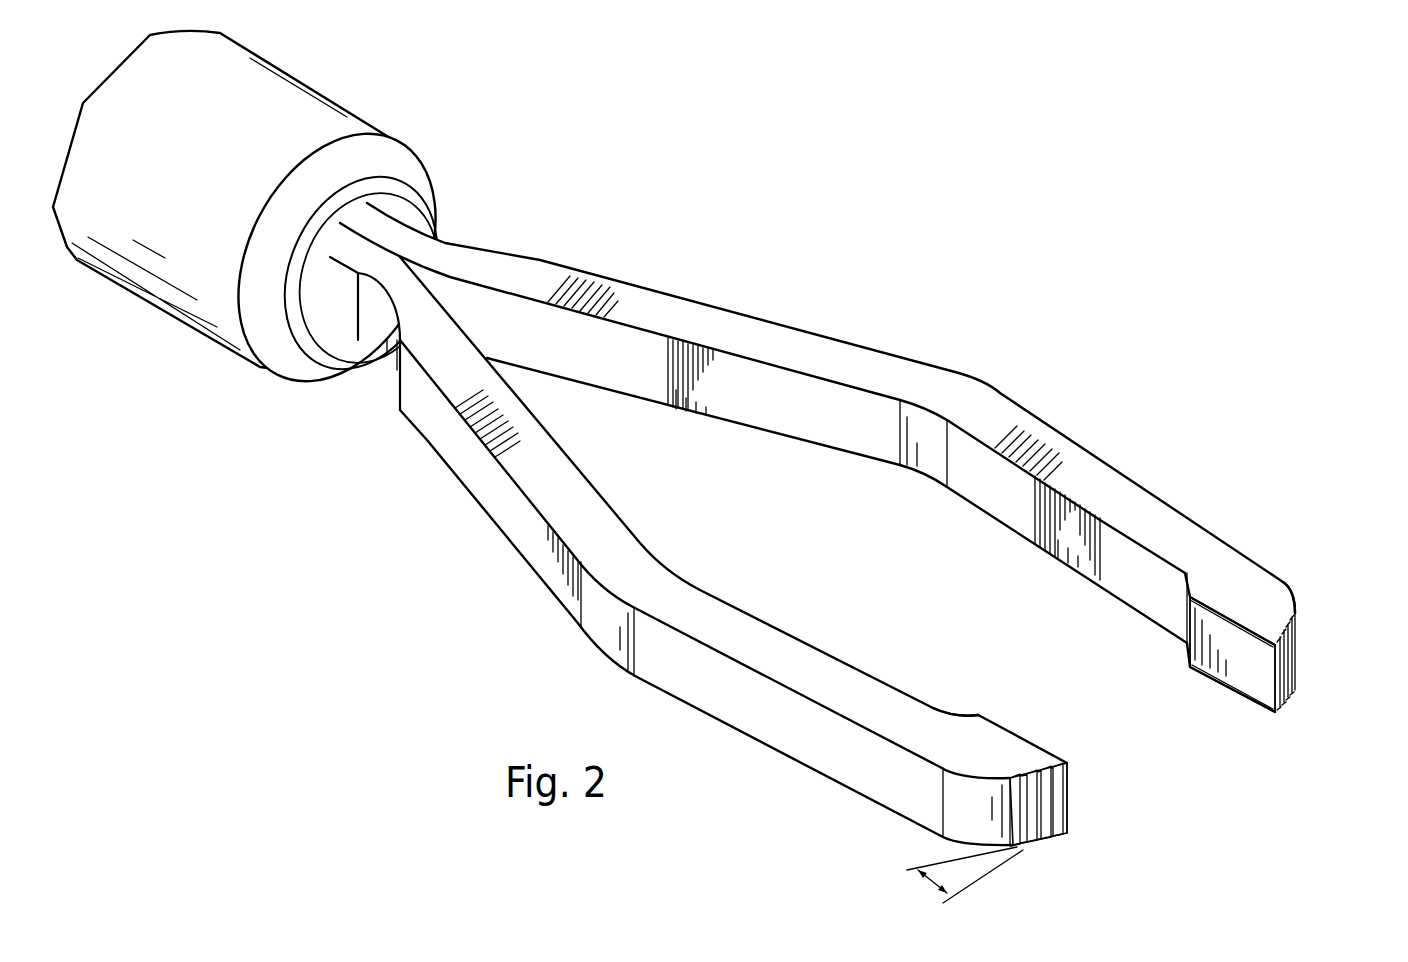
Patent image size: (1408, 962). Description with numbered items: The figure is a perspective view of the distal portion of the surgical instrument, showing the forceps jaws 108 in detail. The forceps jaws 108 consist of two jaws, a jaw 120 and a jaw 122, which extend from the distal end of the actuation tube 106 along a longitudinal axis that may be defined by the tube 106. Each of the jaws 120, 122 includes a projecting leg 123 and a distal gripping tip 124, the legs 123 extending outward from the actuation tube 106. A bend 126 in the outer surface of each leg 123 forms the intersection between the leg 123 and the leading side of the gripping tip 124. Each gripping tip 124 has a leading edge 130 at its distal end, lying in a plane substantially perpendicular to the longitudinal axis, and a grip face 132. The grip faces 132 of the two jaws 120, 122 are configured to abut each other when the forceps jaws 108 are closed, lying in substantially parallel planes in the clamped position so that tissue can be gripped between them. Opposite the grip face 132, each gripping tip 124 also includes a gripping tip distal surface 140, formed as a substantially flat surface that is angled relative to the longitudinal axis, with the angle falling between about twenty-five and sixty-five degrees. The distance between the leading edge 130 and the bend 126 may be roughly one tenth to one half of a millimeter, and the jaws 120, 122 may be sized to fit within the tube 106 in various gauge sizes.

The actuation tube 106 is at (312, 86).
The forceps jaws 108 is at (726, 476).
The jaw 120 is at (812, 502).
The jaw 122 is at (491, 524).
The projecting leg 123 is at (1110, 463).
The distal gripping tip 124 is at (1135, 739).
The bend 126 is at (1293, 593).
The leading edge 130 is at (1280, 673).
The grip face 132 is at (1267, 693).
The gripping tip distal surface 140 is at (965, 884).